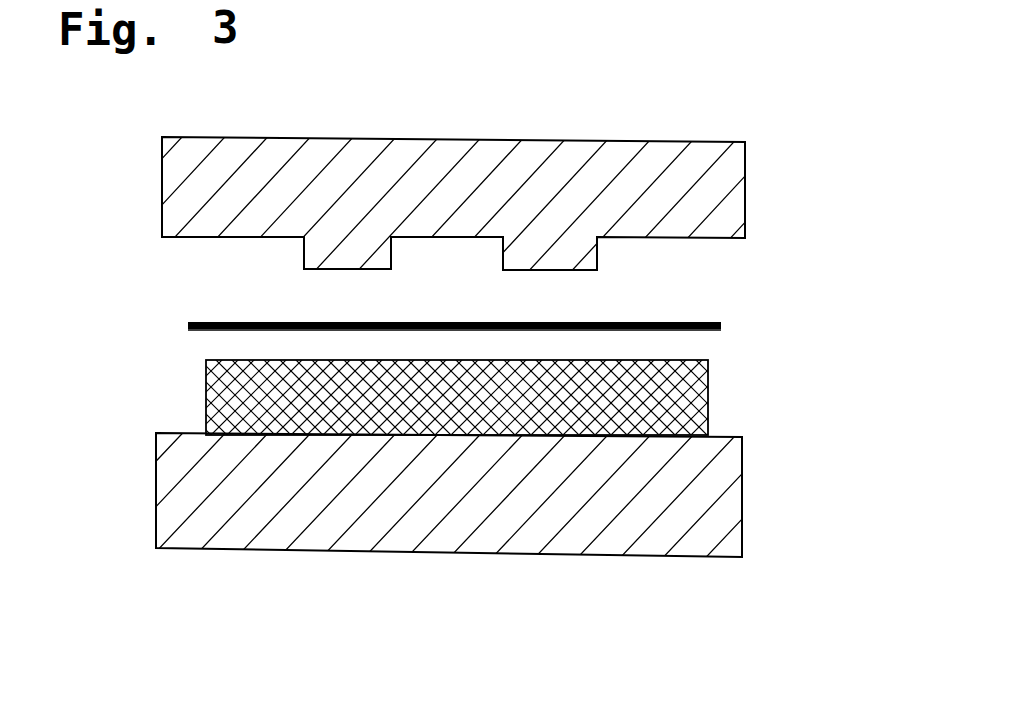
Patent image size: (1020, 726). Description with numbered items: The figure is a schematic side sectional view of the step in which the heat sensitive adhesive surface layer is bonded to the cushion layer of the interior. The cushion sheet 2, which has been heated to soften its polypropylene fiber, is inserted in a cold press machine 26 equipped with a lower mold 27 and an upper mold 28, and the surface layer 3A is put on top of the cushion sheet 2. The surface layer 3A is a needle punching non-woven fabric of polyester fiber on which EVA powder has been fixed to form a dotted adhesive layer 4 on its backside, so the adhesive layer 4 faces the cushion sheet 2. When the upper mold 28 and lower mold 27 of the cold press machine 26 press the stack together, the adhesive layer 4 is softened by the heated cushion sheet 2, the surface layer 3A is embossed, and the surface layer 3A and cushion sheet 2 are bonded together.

The upper mold 28 is at (740, 165).
The lower mold 27 is at (735, 503).
The cold press machine 26 is at (507, 338).
The cushion sheet 2 is at (708, 395).
The surface layer 3A is at (640, 322).
The adhesive layer 4 is at (683, 337).